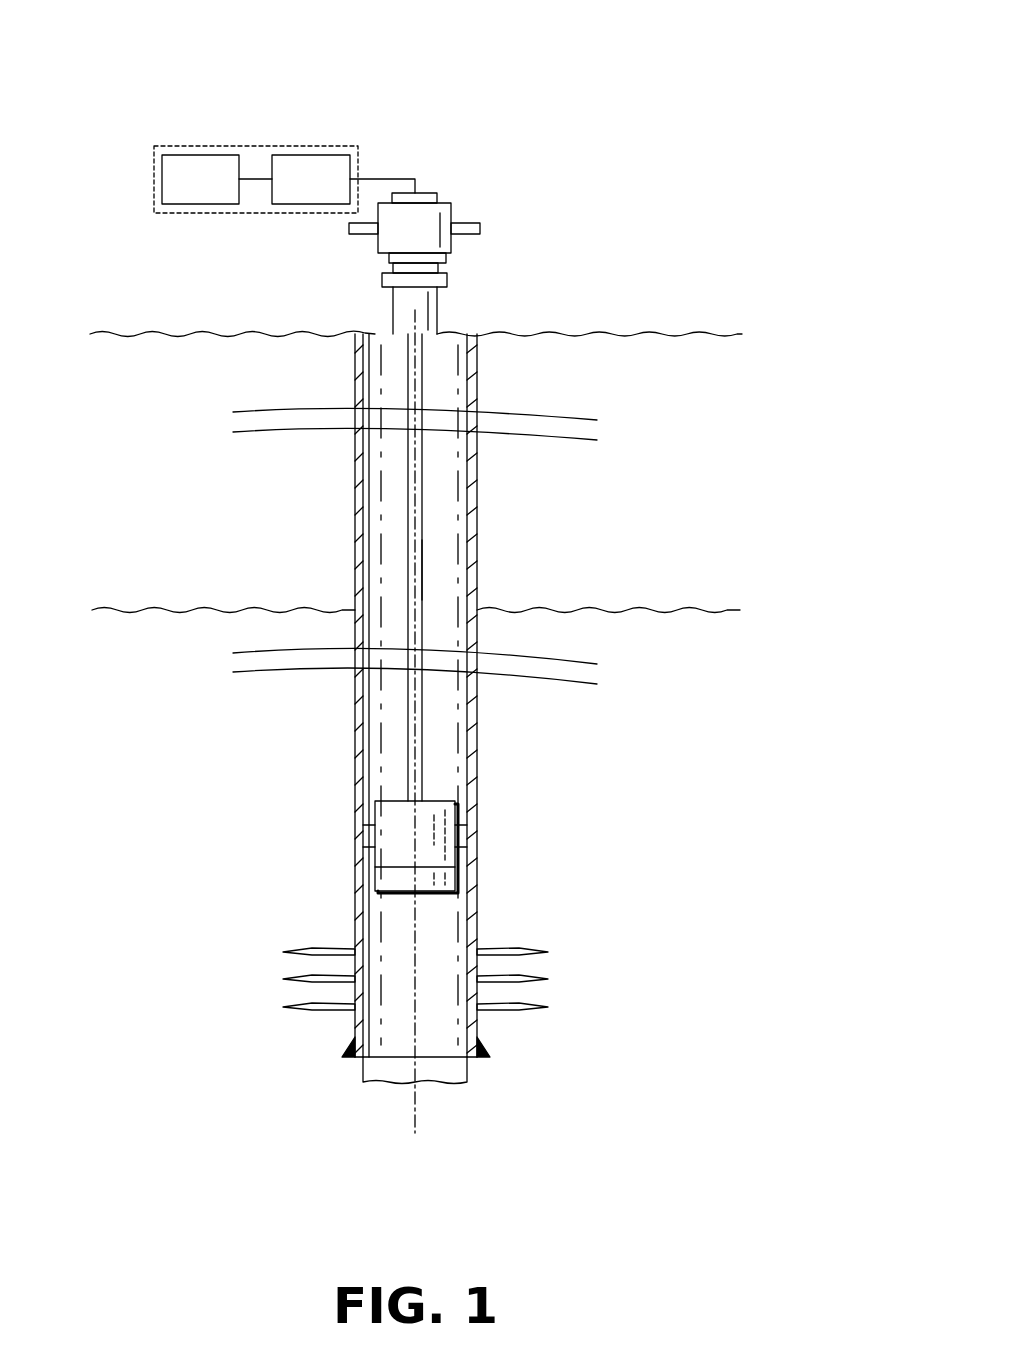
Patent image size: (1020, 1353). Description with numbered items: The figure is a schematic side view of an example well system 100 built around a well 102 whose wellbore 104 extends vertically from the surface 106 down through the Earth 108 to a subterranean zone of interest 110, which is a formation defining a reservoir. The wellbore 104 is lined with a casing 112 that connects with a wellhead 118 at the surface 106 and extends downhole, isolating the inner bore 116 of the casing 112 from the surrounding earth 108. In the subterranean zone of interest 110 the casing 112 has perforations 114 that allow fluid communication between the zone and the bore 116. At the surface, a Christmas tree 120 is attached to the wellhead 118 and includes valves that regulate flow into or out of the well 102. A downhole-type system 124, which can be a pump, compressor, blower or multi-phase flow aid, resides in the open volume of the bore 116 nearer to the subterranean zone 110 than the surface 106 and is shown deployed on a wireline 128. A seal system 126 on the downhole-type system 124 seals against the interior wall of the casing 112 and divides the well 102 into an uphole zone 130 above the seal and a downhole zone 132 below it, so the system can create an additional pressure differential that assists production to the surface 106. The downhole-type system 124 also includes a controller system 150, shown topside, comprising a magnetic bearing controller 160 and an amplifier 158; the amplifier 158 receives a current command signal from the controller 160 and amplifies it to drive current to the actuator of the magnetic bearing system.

The well system 100 is at (716, 100).
The well 102 is at (542, 385).
The wellbore 104 is at (392, 545).
The surface 106 is at (140, 333).
The Earth 108 is at (715, 541).
The subterranean zone of interest 110 is at (595, 729).
The casing 112 is at (357, 503).
The perforations 114 is at (279, 983).
The inner bore of the casing 116 is at (440, 537).
The wellhead 118 is at (356, 272).
The Christmas tree 120 is at (460, 212).
The downhole-type system 124 is at (399, 800).
The seal system 126 is at (370, 847).
The wireline 128 is at (423, 567).
The uphole zone 130 is at (444, 772).
The downhole zone 132 is at (439, 928).
The controller system 150 is at (256, 142).
The amplifier 158 is at (345, 199).
The magnetic bearing controller 160 is at (232, 199).